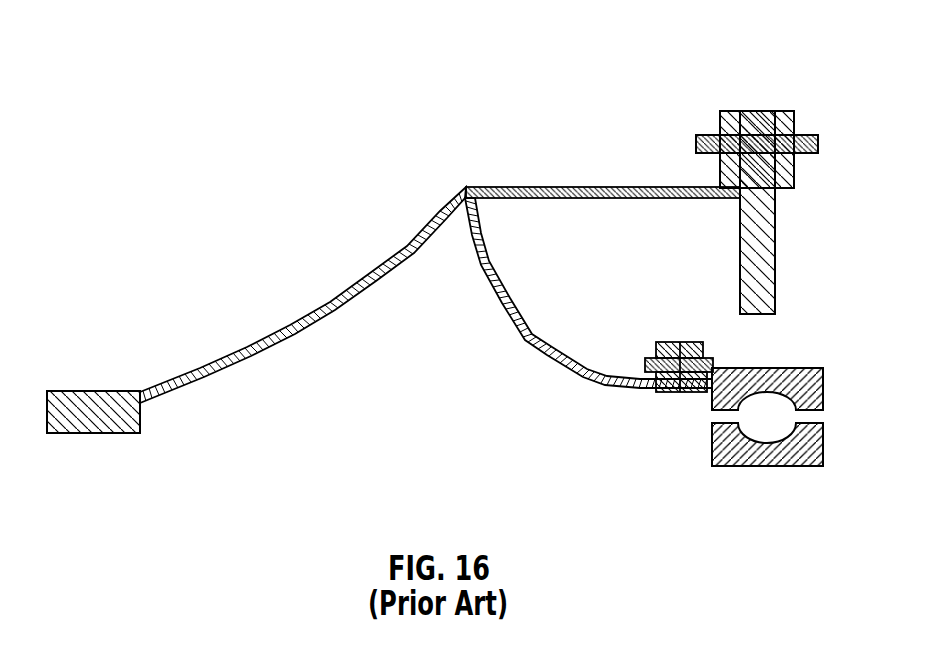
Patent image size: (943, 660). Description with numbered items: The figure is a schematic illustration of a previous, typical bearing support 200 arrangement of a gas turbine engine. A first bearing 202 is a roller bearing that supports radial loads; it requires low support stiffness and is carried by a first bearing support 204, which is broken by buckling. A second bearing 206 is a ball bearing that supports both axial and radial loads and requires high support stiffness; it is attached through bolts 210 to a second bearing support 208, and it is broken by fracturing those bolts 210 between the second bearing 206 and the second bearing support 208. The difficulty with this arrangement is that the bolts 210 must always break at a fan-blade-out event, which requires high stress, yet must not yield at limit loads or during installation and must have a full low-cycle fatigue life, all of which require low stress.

The bearing support 200 is at (140, 79).
The first bearing 202 is at (95, 420).
The first bearing support 204 is at (247, 351).
The second bearing 206 is at (733, 443).
The second bearing support 208 is at (538, 361).
The bolts 210 is at (645, 360).